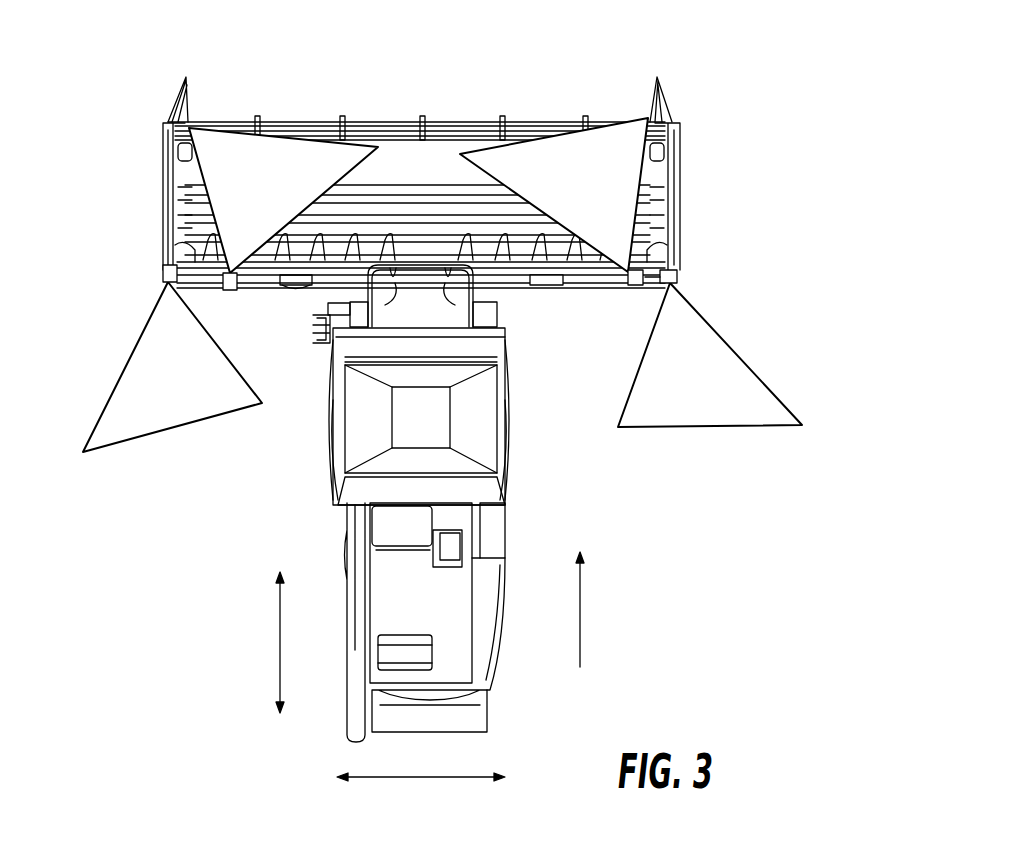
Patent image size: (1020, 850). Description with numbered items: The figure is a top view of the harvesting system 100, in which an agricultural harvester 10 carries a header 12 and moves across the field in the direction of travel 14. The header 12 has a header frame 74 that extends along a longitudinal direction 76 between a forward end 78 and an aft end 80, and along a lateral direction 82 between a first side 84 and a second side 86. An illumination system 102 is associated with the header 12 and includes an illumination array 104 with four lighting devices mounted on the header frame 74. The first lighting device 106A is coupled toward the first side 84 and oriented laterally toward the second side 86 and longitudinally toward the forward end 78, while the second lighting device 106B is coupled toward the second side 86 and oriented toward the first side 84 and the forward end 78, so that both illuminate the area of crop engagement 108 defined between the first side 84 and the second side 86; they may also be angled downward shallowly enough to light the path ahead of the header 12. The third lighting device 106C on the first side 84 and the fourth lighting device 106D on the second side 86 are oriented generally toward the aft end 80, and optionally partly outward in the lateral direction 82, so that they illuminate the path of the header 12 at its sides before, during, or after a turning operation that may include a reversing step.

The agricultural harvester 10 is at (497, 648).
The header 12 is at (352, 85).
The direction of travel 14 is at (580, 615).
The header frame 74 is at (545, 285).
The longitudinal direction 76 is at (279, 645).
The forward end 78 is at (168, 88).
The aft end 80 is at (708, 283).
The lateral direction 82 is at (407, 778).
The first side 84 is at (112, 200).
The second side 86 is at (703, 185).
The harvesting system 100 is at (97, 102).
The illumination system 102 is at (678, 75).
The illumination array 104 is at (93, 273).
The first lighting device 106A is at (230, 290).
The second lighting device 106B is at (635, 288).
The third lighting device 106C is at (166, 275).
The fourth lighting device 106D is at (678, 273).
The area of crop engagement 108 is at (570, 63).